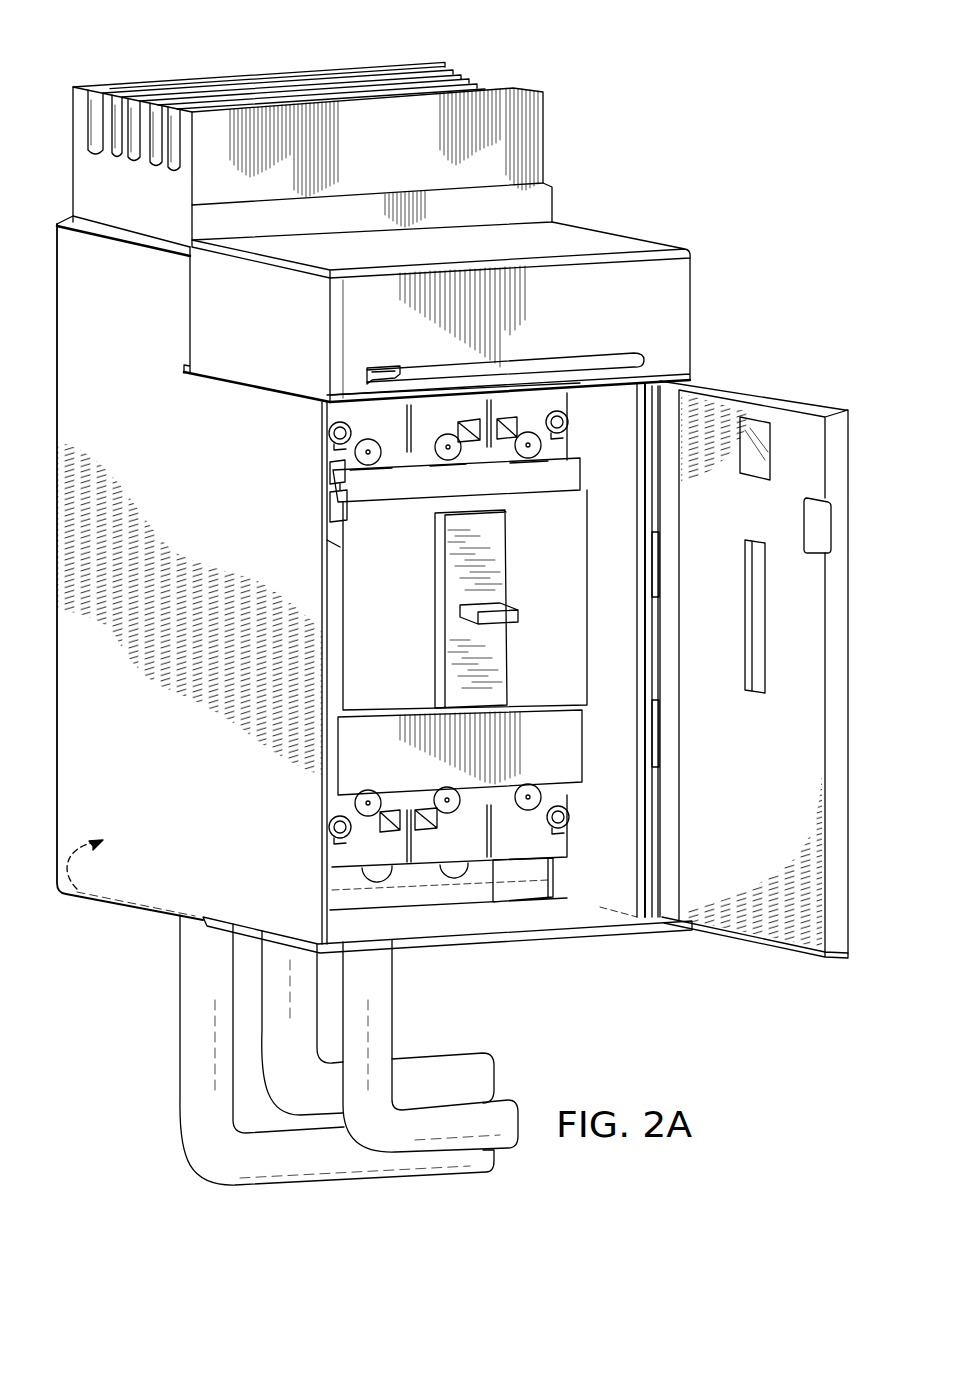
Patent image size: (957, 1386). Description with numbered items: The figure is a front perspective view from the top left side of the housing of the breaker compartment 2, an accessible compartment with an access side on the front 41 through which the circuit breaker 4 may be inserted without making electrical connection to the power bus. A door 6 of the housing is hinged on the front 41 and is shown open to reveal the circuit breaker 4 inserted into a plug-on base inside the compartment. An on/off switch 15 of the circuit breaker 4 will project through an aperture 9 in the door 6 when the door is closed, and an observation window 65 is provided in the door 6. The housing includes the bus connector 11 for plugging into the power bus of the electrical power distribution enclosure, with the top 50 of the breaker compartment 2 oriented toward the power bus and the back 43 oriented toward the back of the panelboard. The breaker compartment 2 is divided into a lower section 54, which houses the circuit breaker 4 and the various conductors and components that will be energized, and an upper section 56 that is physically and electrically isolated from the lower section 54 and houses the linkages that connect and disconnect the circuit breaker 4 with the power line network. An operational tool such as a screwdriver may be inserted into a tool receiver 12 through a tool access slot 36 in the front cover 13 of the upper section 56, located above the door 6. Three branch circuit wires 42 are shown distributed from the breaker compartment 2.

The breaker compartment 2 is at (712, 152).
The circuit breaker 4 is at (588, 752).
The door 6 is at (745, 958).
The aperture 9 is at (757, 690).
The bus connector 11 is at (497, 80).
The tool receiver 12 is at (368, 373).
The front cover 13 is at (388, 322).
The on/off switch 15 is at (433, 605).
The tool access slot 36 is at (568, 365).
The front 41 is at (537, 963).
The branch circuit wires 42 is at (258, 968).
The back 43 is at (78, 893).
The top 50 is at (434, 247).
The lower section 54 is at (305, 916).
The upper section 56 is at (697, 259).
The observation window 65 is at (742, 477).